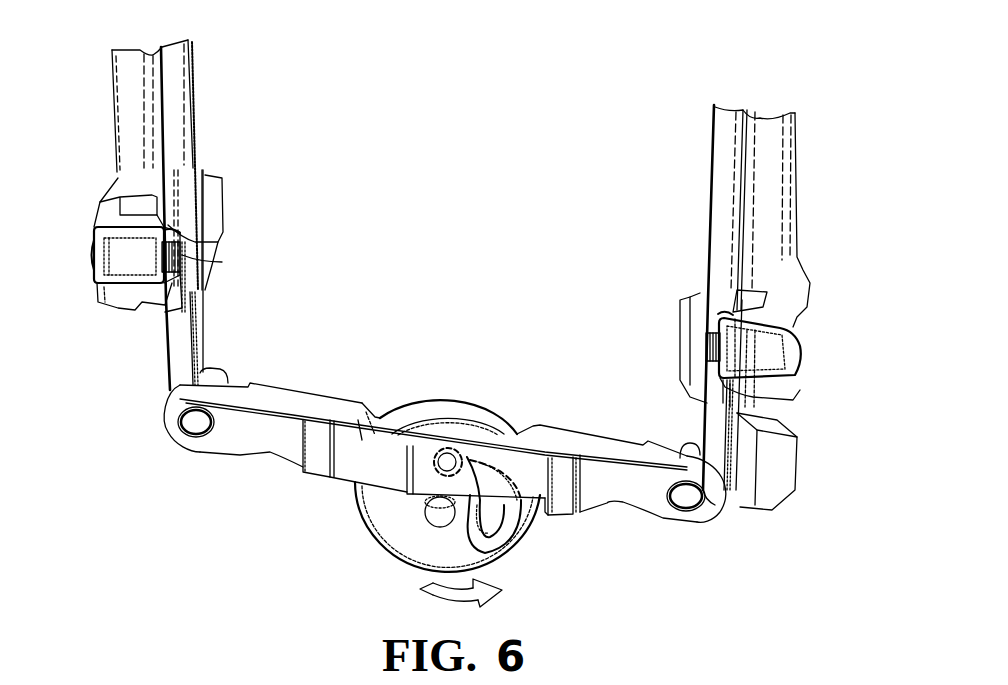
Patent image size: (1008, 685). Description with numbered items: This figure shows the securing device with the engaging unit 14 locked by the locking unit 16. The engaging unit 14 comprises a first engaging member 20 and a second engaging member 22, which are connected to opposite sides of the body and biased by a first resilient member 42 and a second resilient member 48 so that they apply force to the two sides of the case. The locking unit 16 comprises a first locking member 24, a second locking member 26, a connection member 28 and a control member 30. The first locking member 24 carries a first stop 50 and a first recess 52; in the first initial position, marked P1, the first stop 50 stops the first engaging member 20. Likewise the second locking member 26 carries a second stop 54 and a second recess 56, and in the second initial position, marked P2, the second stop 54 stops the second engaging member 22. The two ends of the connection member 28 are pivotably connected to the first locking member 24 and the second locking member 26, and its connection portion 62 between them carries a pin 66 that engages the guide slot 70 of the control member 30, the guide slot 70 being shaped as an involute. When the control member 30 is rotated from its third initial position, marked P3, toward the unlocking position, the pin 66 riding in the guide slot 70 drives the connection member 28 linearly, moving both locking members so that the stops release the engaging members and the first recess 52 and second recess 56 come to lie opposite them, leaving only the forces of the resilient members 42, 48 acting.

The engaging unit 14 is at (86, 284).
The locking unit 16 is at (334, 505).
The first engaging member 20 is at (800, 348).
The second engaging member 22 is at (94, 250).
The first locking member 24 is at (705, 420).
The second locking member 26 is at (183, 335).
The connection member 28 is at (616, 486).
The control member 30 is at (400, 527).
The first resilient member 42 is at (703, 337).
The second resilient member 48 is at (180, 252).
The first stop 50 is at (728, 314).
The first recess 52 is at (795, 403).
The second stop 54 is at (173, 230).
The second recess 56 is at (161, 292).
The connection portion 62 is at (361, 437).
The pin 66 is at (455, 450).
The guide slot 70 is at (500, 507).